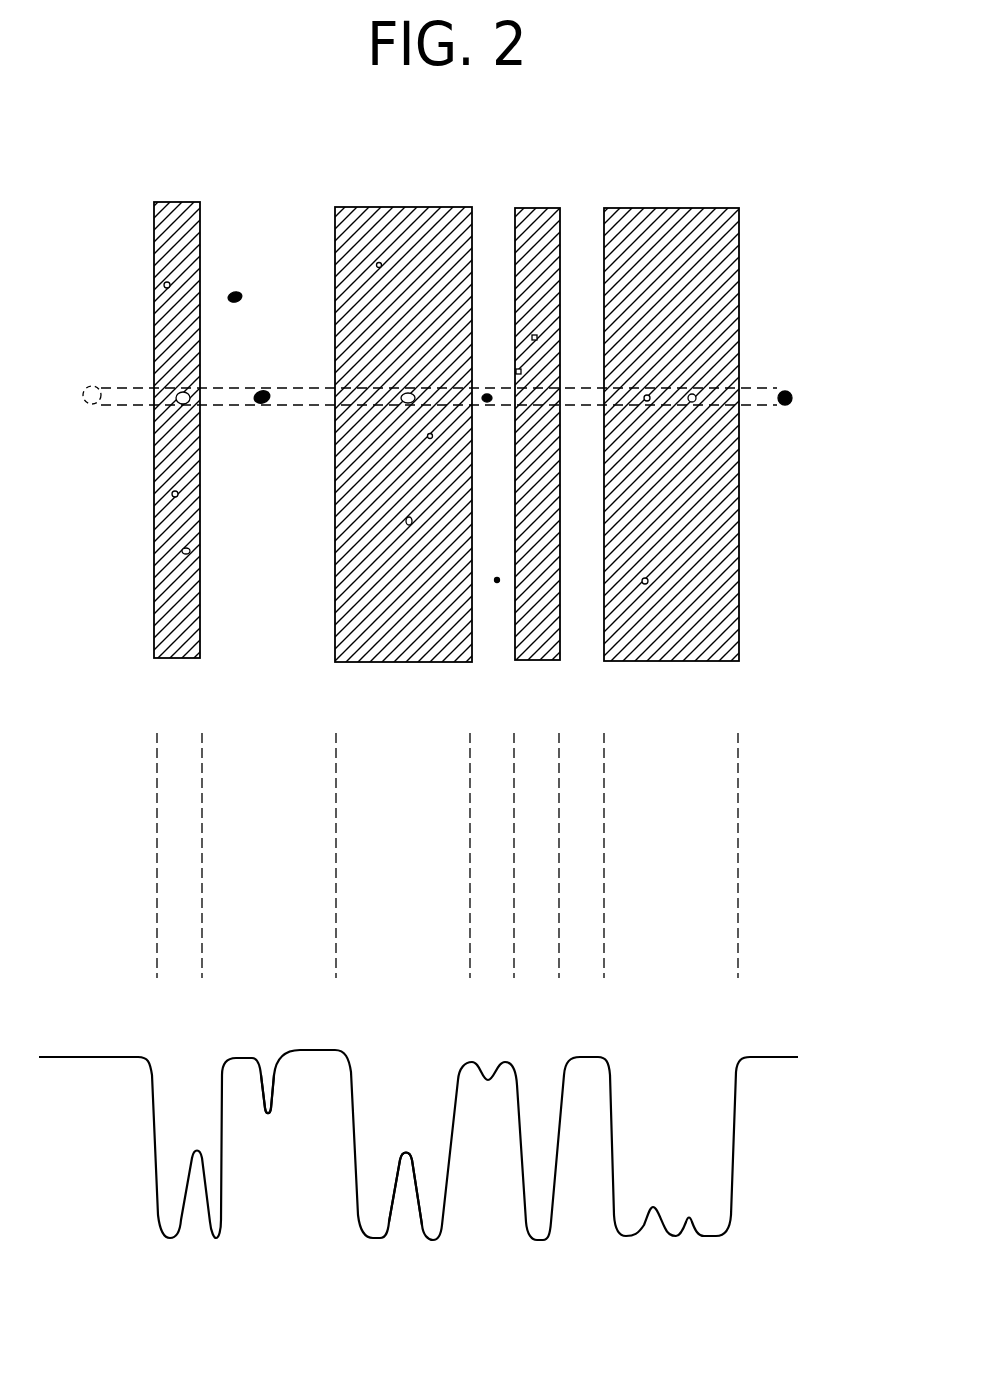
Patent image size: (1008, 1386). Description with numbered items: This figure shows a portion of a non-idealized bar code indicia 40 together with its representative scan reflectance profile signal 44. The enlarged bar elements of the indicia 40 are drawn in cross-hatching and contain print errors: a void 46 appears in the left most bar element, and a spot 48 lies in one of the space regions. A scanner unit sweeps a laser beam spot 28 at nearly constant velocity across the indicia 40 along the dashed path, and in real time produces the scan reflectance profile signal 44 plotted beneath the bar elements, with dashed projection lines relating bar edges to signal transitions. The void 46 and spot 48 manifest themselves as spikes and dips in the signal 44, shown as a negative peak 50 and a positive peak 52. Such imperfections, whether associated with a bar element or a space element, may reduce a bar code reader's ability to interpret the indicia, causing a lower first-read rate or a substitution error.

The non-idealized bar code indicia 40 is at (795, 297).
The scan reflectance profile signal 44 is at (802, 992).
The void 46 is at (203, 388).
The spot 48 is at (262, 408).
The laser beam spot 28 is at (792, 402).
The negative peak 50 is at (268, 1112).
The positive peak 52 is at (407, 1150).